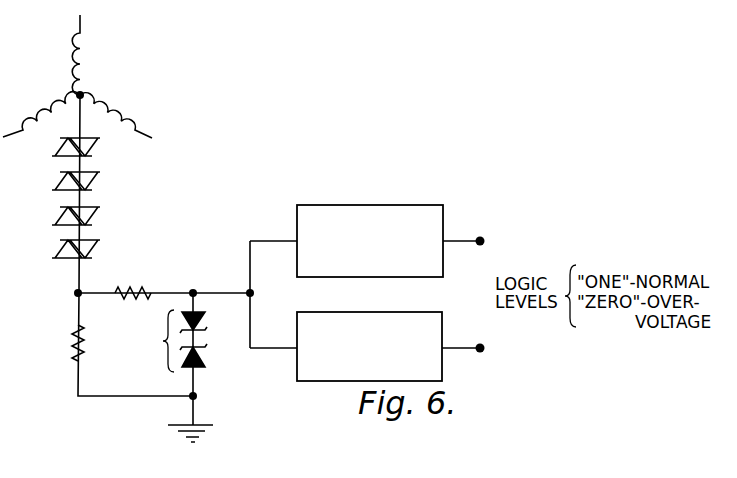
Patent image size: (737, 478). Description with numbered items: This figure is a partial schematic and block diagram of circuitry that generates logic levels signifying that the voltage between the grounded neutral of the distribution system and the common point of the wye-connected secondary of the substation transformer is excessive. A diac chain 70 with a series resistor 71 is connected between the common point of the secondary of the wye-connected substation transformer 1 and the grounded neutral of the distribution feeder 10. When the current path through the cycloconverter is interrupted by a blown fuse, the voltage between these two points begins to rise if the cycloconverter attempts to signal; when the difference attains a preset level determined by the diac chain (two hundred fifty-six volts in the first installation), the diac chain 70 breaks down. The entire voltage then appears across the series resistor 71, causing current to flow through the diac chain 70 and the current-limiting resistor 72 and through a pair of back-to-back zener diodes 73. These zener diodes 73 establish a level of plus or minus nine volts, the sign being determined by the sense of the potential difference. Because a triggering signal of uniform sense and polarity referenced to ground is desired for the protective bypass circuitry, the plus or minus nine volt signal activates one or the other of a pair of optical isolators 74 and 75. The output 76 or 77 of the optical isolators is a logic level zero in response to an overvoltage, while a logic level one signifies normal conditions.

The wye-connected substation transformer 1 is at (77, 76).
The grounded neutral of the distribution feeder 10 is at (197, 398).
The diac chain 70 is at (108, 188).
The series resistor 71 is at (72, 340).
The current-limiting resistor 72 is at (132, 288).
The back-to-back zener diodes 73 is at (163, 341).
The optical isolator 74 is at (413, 207).
The optical isolator 75 is at (413, 312).
The output of optical isolator 76 is at (479, 237).
The output of optical isolator 77 is at (478, 344).